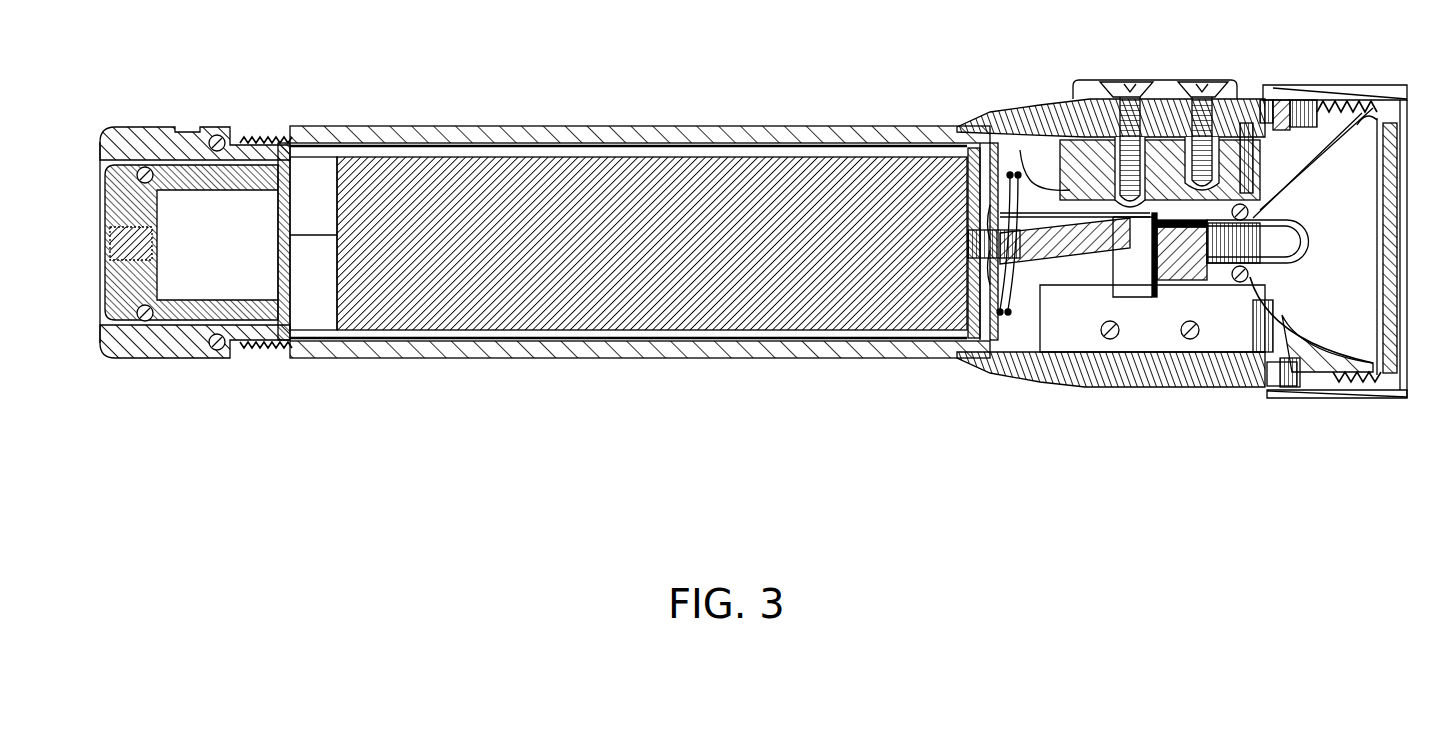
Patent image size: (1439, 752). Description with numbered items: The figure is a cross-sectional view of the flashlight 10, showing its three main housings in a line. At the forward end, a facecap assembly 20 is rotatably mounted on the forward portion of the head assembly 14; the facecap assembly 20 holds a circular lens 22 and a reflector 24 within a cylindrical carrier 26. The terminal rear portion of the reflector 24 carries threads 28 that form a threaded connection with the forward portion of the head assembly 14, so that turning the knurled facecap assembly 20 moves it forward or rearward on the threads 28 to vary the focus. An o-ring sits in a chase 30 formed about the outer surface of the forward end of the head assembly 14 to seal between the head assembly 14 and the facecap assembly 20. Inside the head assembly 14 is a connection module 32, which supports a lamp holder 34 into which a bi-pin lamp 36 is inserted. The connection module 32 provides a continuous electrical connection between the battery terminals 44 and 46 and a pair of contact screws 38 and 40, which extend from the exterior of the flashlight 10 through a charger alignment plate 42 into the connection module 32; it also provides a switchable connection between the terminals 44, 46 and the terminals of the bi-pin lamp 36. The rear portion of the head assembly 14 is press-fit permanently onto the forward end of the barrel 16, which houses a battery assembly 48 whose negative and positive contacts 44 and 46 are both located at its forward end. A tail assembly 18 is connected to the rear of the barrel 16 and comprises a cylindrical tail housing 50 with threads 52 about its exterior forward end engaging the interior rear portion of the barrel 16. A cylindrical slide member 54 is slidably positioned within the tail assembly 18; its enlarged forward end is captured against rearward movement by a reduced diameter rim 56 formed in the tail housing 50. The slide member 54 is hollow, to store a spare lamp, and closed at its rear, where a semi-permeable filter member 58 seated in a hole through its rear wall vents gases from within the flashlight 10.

The flashlight 10 is at (741, 253).
The head assembly 14 is at (1205, 396).
The barrel 16 is at (620, 370).
The tail assembly 18 is at (183, 231).
The facecap assembly 20 is at (1333, 409).
The lens 22 is at (1362, 100).
The reflector 24 is at (1312, 168).
The cylindrical carrier 26 is at (1327, 90).
The threads 28 is at (1272, 100).
The chase 30 is at (1265, 395).
The connection module 32 is at (1150, 340).
The lamp holder 34 is at (1162, 280).
The bi-pin lamp 36 is at (1310, 257).
The contact screw 38 is at (1140, 90).
The contact screw 40 is at (1200, 84).
The charger alignment plate 42 is at (1072, 98).
The negative battery contact 44 is at (963, 243).
The positive battery contact 46 is at (1020, 165).
The battery assembly 48 is at (715, 185).
The tail housing 50 is at (145, 127).
The threads 52 is at (245, 137).
The slide member 54 is at (113, 185).
The reduced diameter rim 56 is at (233, 138).
The semi-permeable filter member 58 is at (157, 238).